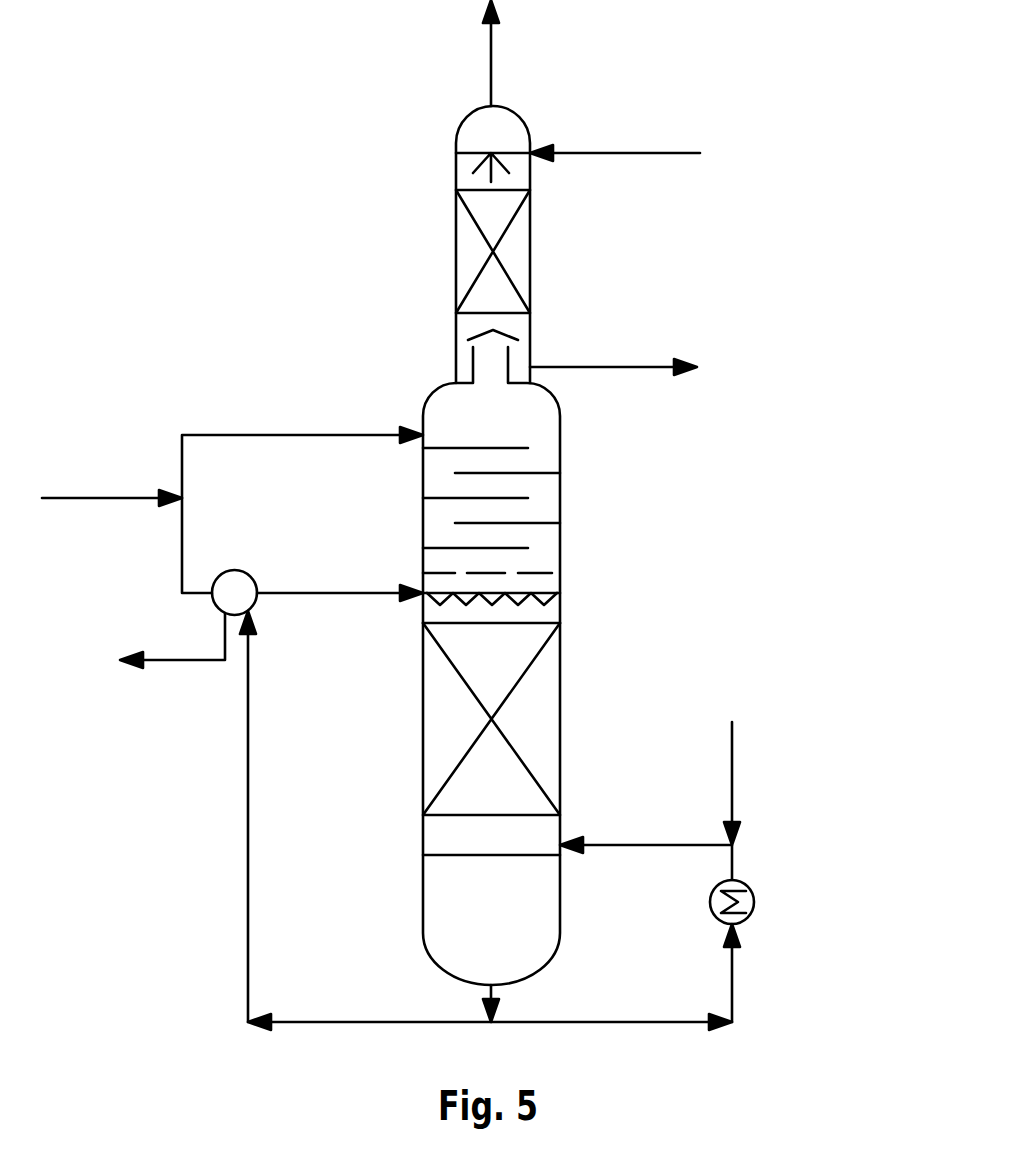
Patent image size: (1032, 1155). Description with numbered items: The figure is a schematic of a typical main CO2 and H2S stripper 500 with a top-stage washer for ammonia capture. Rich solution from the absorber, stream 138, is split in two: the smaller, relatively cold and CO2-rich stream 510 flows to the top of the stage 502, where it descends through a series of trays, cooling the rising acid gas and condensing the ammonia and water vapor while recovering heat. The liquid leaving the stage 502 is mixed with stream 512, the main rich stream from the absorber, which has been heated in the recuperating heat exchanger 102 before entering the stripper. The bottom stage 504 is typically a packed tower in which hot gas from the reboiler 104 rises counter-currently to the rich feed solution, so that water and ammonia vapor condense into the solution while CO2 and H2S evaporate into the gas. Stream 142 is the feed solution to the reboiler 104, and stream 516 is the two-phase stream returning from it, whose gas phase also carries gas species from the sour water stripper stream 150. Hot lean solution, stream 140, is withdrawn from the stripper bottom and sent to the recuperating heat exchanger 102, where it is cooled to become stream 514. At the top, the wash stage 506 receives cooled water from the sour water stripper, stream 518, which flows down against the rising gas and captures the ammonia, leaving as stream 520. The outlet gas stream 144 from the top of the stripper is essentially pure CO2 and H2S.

The main CO2 and H2S stripper 500 is at (437, 392).
The stage 502 is at (562, 507).
The bottom stage 504 is at (422, 750).
The wash stage 506 is at (455, 263).
The stream 510 is at (343, 435).
The stream 512 is at (352, 592).
The stream 514 is at (190, 660).
The stream 516 is at (640, 845).
The stream 518 is at (633, 155).
The stream 520 is at (648, 367).
The stream 138 is at (103, 498).
The stream 140 is at (347, 1022).
The stream 142 is at (733, 993).
The outlet gas stream 144 is at (492, 50).
The sour water stripper stream 150 is at (733, 758).
The recuperating heat exchanger 102 is at (227, 573).
The reboiler 104 is at (755, 897).